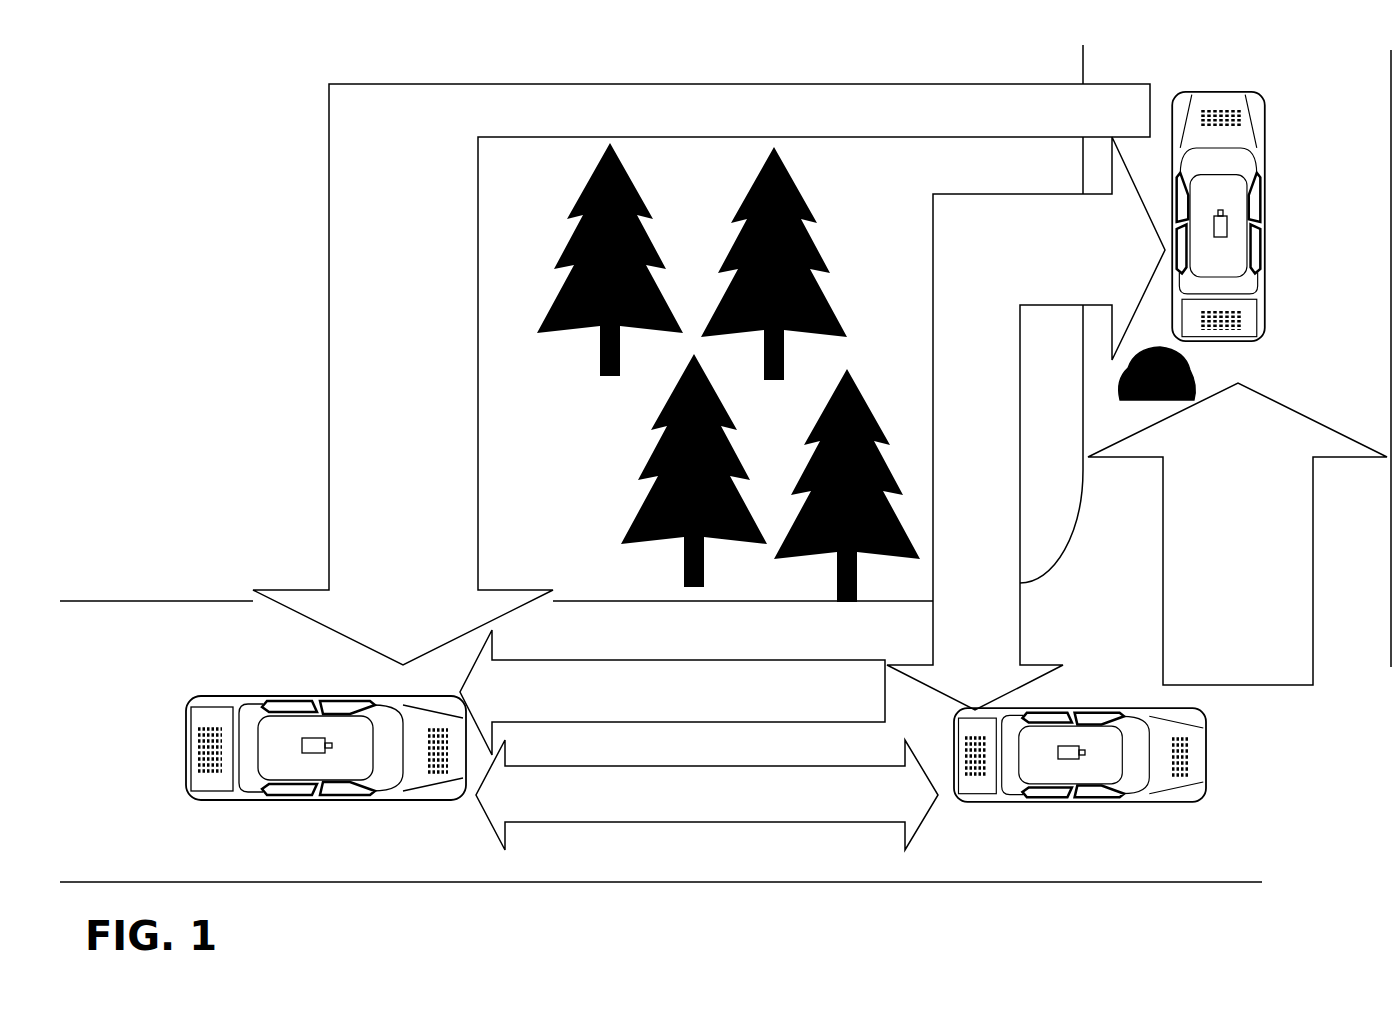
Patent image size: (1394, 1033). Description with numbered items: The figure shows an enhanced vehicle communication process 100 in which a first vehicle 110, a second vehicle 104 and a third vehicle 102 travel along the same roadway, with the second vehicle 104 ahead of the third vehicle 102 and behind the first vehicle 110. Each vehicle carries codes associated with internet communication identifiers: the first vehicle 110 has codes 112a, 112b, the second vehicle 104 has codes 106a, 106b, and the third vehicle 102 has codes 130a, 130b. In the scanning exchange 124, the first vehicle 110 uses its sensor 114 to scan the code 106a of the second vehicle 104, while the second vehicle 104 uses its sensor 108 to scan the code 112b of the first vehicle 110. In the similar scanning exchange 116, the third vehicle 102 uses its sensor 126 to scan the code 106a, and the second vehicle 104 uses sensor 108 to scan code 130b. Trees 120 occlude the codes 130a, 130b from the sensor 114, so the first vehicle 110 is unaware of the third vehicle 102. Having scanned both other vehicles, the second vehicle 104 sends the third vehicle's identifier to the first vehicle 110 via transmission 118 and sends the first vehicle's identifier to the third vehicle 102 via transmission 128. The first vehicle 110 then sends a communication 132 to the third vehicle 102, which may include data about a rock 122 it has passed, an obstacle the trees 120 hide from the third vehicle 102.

The enhanced vehicle communication process 100 is at (176, 56).
The third vehicle 102 is at (191, 791).
The second vehicle 104 is at (1202, 802).
The code 106a is at (980, 779).
The code 106b is at (1195, 744).
The sensor 108 is at (1074, 760).
The first vehicle 110 is at (1265, 212).
The code 112a is at (1240, 110).
The code 112b is at (1238, 312).
The sensor 114 is at (1233, 230).
The scanning codes associated with internet communication identifiers 116 is at (782, 825).
The transmission/communication 118 is at (1163, 660).
The trees 120 is at (834, 191).
The rock 122 is at (1118, 372).
The scanning codes associated with internet communication identifiers 124 is at (933, 296).
The sensor 126 is at (318, 755).
The transmission/communication 128 is at (832, 660).
The code 130a is at (208, 776).
The code 130b is at (437, 776).
The communication/transmission 132 is at (329, 296).